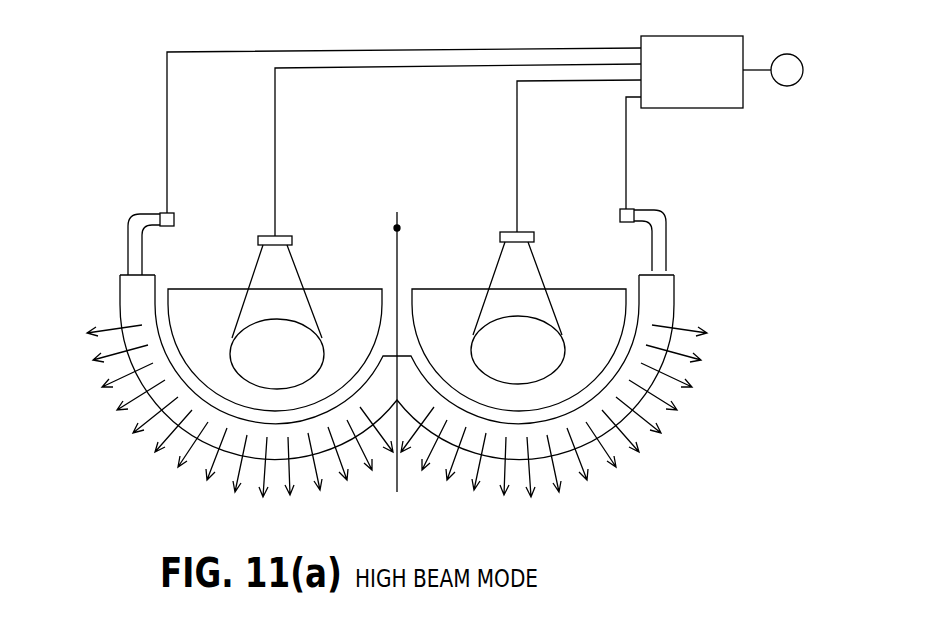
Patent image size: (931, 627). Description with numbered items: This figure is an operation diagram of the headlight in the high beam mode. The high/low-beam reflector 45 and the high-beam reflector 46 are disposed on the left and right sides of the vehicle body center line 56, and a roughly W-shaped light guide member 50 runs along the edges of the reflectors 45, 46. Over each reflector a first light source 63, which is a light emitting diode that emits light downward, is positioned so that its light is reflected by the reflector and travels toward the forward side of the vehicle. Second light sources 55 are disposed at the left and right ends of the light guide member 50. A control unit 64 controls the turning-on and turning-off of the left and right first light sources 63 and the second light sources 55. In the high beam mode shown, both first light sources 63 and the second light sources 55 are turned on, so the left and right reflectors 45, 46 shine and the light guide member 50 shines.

The high/low-beam reflector 45 is at (325, 305).
The high-beam reflector 46 is at (452, 305).
The light guide member 50 is at (672, 292).
The second light source 55 is at (168, 213).
The vehicle body center line 56 is at (399, 228).
The first light source 63 is at (282, 234).
The control unit 64 is at (697, 108).